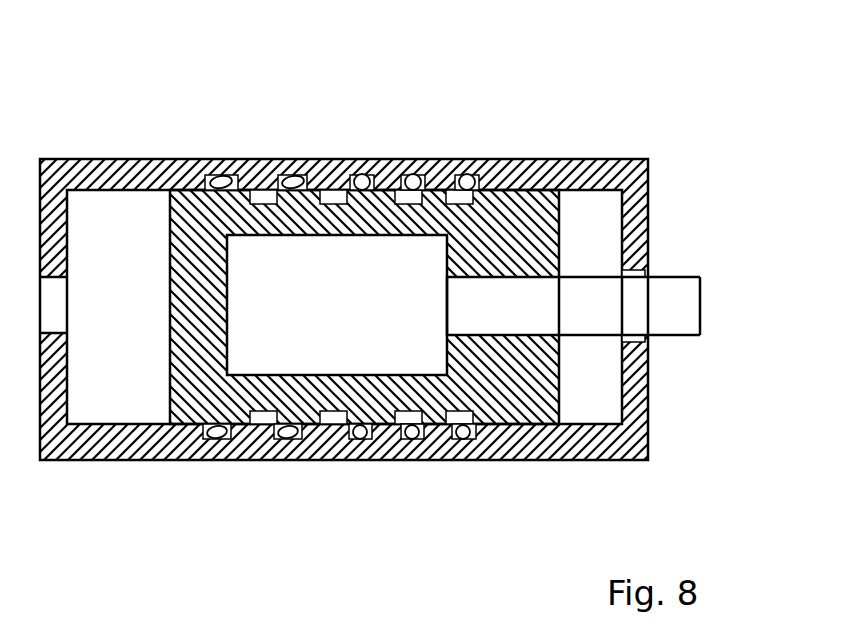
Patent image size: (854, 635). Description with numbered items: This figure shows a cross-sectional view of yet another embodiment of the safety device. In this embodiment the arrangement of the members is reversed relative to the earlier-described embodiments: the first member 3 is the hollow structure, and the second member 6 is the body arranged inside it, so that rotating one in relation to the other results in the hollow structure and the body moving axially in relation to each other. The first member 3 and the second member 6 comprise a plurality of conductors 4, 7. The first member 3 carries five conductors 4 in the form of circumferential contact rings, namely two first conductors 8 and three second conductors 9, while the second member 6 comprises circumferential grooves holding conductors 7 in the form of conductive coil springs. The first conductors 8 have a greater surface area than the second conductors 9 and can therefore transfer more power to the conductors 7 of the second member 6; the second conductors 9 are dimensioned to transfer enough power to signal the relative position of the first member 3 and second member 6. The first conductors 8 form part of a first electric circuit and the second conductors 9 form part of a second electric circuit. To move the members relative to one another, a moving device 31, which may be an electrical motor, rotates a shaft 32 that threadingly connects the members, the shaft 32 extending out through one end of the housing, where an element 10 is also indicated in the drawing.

The first member 3 is at (590, 178).
The conductors 4 is at (207, 190).
The second member 6 is at (170, 233).
The conductors 7 is at (230, 186).
The first conductors 8 is at (225, 437).
The second conductors 9 is at (368, 434).
The piston rod 10 is at (650, 272).
The moving device 31 is at (432, 349).
The shaft 32 is at (675, 313).